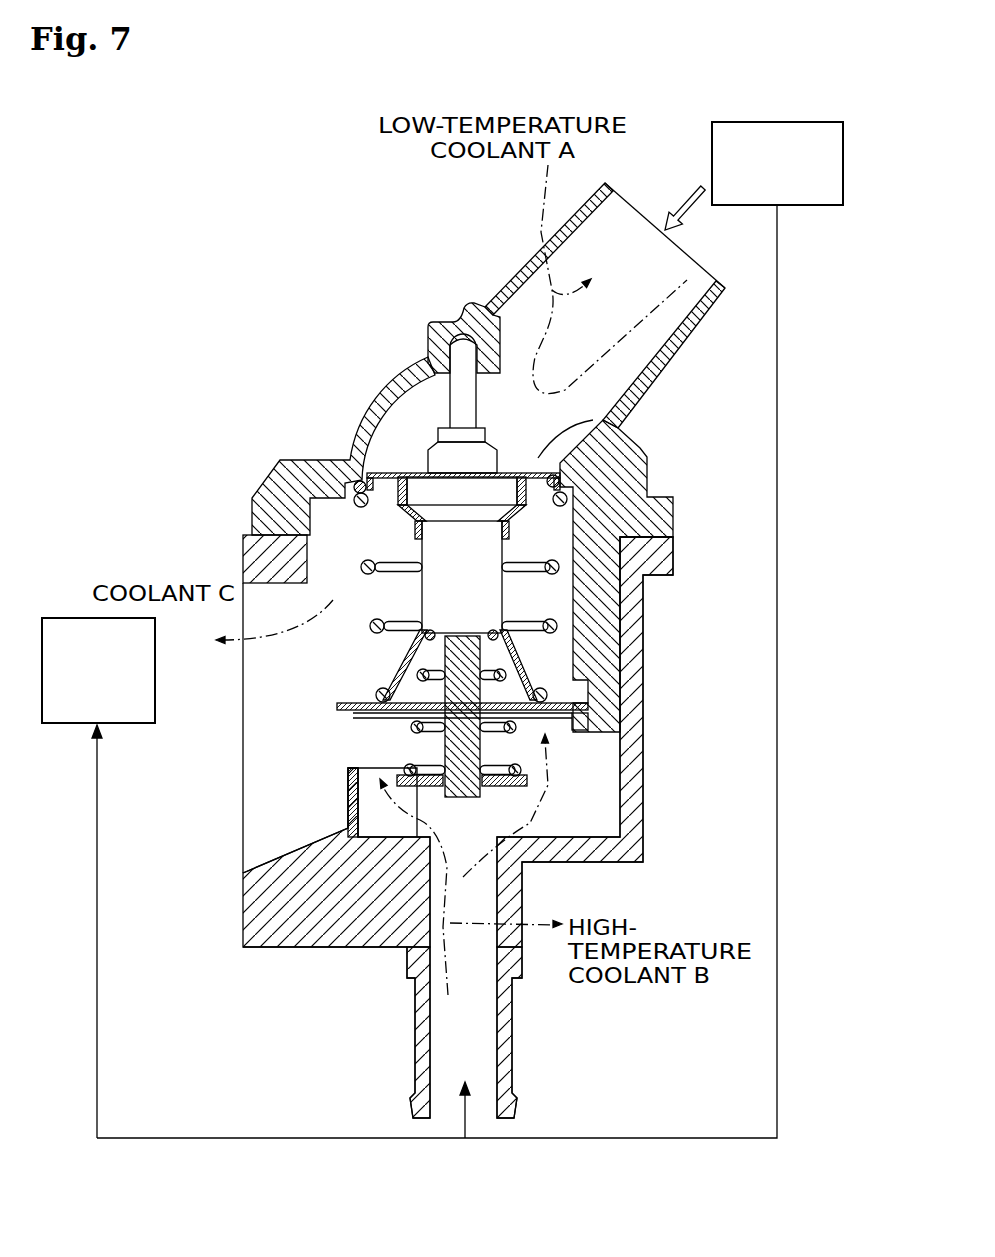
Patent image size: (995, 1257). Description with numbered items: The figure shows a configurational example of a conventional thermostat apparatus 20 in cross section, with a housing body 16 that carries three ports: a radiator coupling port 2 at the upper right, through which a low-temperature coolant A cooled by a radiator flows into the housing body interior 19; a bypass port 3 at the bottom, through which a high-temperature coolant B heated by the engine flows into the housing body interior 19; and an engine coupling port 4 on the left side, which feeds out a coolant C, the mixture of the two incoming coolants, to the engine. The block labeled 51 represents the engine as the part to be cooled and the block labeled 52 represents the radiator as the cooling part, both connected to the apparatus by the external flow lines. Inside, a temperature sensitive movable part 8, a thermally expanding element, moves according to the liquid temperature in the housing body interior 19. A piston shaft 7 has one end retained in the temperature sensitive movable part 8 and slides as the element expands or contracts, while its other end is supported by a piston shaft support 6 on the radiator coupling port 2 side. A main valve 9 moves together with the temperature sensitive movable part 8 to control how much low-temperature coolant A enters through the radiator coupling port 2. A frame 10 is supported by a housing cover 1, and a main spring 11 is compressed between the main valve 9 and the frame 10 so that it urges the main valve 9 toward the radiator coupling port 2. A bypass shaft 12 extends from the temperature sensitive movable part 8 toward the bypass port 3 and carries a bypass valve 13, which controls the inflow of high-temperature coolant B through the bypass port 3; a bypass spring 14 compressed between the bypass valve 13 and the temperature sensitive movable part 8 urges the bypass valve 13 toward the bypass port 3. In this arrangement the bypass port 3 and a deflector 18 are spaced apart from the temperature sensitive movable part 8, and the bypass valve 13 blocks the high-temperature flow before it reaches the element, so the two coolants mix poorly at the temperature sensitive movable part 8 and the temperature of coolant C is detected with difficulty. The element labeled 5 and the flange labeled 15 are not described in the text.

The housing cover 1 is at (365, 393).
The radiator coupling port 2 is at (618, 428).
The bypass port 3 is at (522, 840).
The engine coupling port 4 is at (243, 757).
The thermo element 5 is at (378, 350).
The piston shaft support 6 is at (462, 318).
The piston shaft 7 is at (478, 397).
The temperature sensitive movable part 8 is at (358, 585).
The main valve 9 is at (415, 562).
The frame 10 is at (520, 657).
The main spring 11 is at (560, 562).
The bypass shaft 12 is at (530, 782).
The bypass valve 13 is at (625, 832).
The bypass spring 14 is at (620, 733).
The flange 15 is at (250, 532).
The housing body 16 is at (648, 667).
The deflector 18 is at (348, 790).
The housing body interior 19 is at (360, 612).
The thermostat apparatus 20 is at (268, 265).
The engine (part to be cooled) 51 is at (67, 618).
The radiator (cooling part) 52 is at (712, 160).